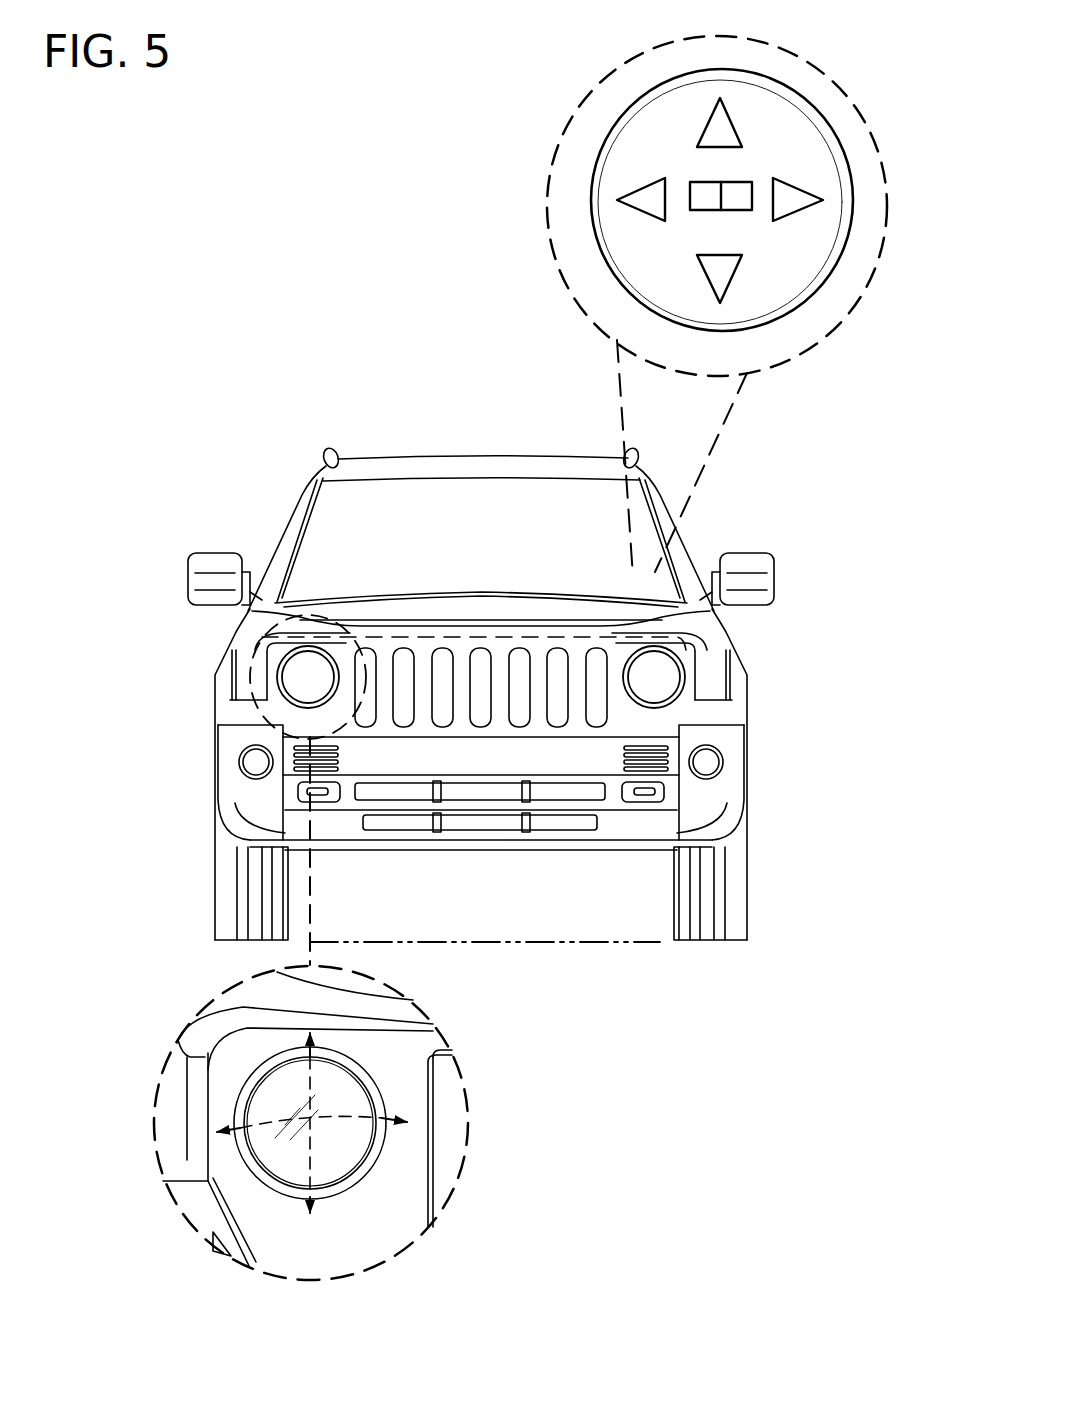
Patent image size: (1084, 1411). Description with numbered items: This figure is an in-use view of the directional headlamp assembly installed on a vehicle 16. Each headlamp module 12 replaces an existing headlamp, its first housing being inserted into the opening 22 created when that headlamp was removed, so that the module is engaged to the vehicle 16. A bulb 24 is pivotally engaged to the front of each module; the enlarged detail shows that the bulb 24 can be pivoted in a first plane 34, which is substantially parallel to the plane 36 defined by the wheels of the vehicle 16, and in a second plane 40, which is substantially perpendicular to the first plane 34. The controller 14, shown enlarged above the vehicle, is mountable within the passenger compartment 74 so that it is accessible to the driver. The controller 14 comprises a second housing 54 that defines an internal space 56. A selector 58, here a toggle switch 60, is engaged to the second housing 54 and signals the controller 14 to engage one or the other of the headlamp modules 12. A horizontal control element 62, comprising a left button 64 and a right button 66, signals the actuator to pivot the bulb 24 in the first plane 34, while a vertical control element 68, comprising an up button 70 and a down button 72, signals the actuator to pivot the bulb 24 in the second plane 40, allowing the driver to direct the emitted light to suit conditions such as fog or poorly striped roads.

The headlamp module 12 is at (467, 621).
The controller 14 is at (679, 243).
The vehicle 16 is at (481, 634).
The opening 22 is at (627, 652).
The bulb 24 is at (277, 1158).
The first plane 34 is at (344, 1149).
The plane defined by wheels 36 is at (547, 945).
The second plane 40 is at (344, 1149).
The second housing 54 is at (887, 245).
The internal space 56 is at (860, 230).
The selector 58 is at (821, 127).
The toggle switch 60 is at (743, 180).
The horizontal control element 62 is at (704, 292).
The left button 64 is at (617, 192).
The right button 66 is at (797, 184).
The vertical control element 68 is at (695, 74).
The up button 70 is at (738, 123).
The down button 72 is at (733, 282).
The passenger compartment 74 is at (390, 551).